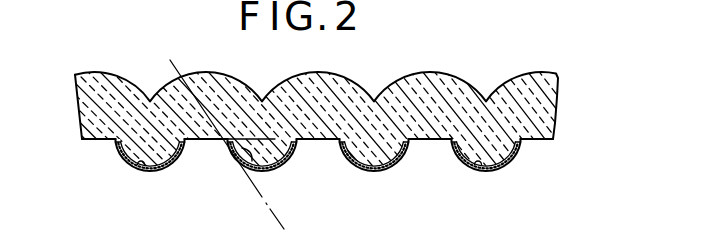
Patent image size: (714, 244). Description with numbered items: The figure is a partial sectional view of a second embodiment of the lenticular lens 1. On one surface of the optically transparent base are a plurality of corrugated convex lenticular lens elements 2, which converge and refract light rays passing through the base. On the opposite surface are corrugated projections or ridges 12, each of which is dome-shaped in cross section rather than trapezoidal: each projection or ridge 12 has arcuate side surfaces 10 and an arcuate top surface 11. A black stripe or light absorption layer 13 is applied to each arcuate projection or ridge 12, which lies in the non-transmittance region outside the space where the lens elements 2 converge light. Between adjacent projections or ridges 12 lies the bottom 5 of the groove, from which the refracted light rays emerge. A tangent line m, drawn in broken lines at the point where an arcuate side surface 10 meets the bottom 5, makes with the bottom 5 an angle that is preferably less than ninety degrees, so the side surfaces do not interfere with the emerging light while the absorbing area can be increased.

The lenticular lens 1 is at (565, 73).
The lenticular lens elements 2 is at (432, 72).
The bottom 5 is at (202, 142).
The arcuate side surfaces 10 is at (115, 142).
The arcuate top surface 11 is at (137, 165).
The corrugated projections or ridges 12 is at (279, 152).
The light absorption layer 13 is at (152, 171).
The tangent line m is at (273, 221).